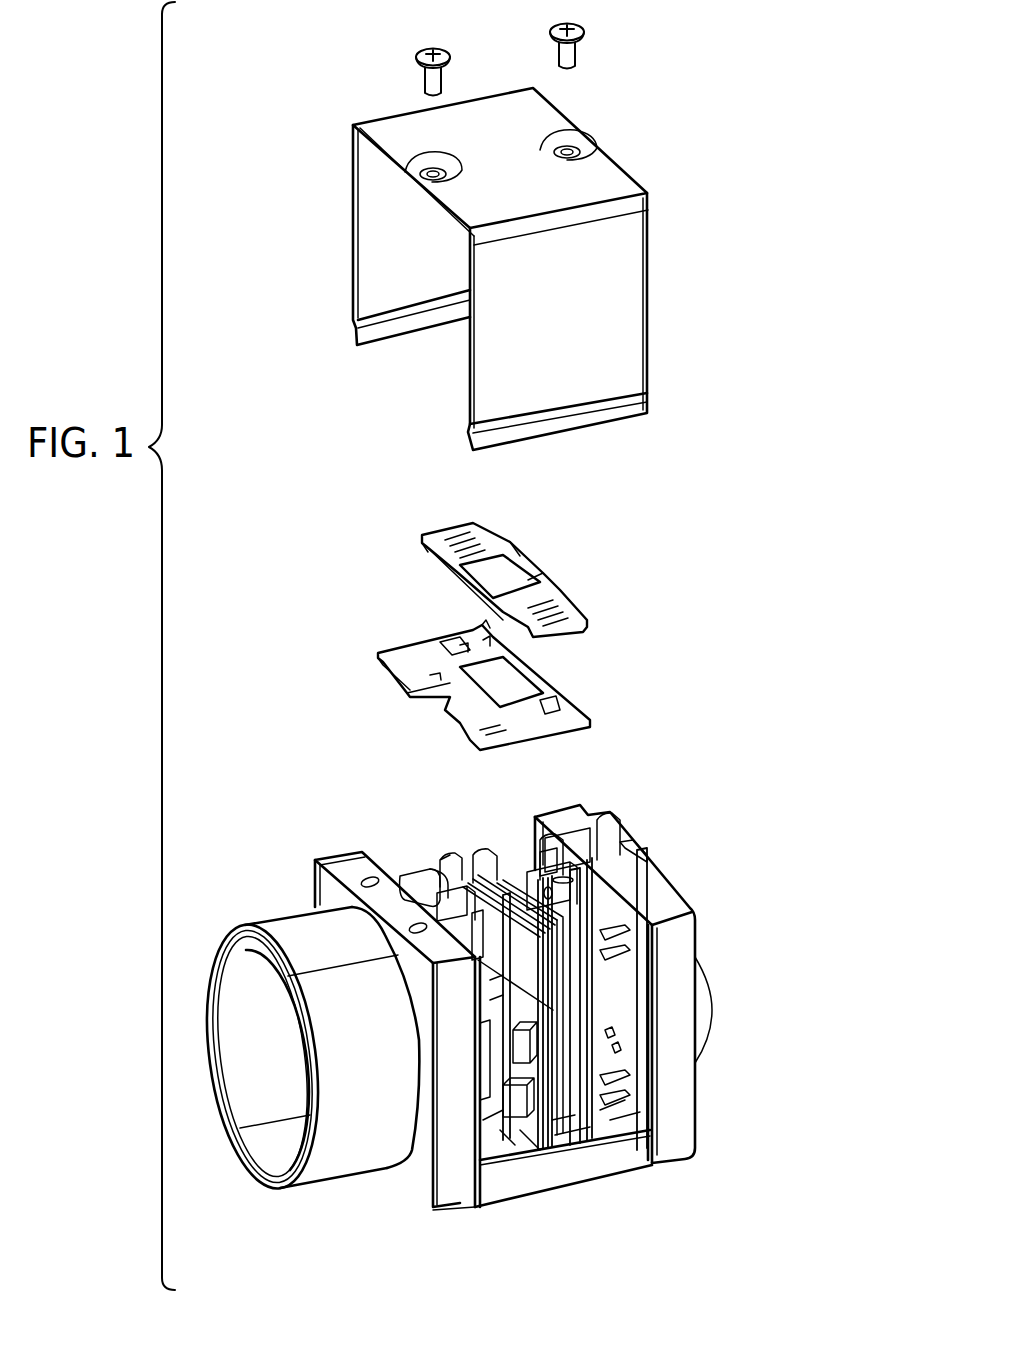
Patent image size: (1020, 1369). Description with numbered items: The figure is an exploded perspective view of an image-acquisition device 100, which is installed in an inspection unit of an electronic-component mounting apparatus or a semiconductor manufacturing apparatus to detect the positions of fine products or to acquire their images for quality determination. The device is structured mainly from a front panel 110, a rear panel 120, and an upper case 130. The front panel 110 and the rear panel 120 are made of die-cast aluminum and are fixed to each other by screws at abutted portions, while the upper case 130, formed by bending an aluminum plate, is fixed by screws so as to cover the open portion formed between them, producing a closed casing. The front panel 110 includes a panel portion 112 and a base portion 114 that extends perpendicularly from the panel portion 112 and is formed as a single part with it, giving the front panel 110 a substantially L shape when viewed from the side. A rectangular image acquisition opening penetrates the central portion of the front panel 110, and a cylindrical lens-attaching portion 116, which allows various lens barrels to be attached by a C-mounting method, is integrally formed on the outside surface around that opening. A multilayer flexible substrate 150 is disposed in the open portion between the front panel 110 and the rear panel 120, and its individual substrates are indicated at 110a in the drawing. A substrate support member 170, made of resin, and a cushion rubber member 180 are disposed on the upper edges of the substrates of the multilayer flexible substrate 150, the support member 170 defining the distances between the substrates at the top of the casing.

The image-acquisition device 100 is at (136, 523).
The front panel 110 is at (480, 1215).
The circuit board 110a is at (405, 870).
The panel portion 112 is at (407, 1173).
The base portion 114 is at (523, 1173).
The lens-attaching portion 116 is at (340, 1163).
The rear panel 120 is at (677, 1143).
The upper case 130 is at (633, 357).
The multilayer flexible substrate 150 is at (440, 825).
The substrate support member 170 is at (437, 647).
The cushion rubber member 180 is at (573, 607).